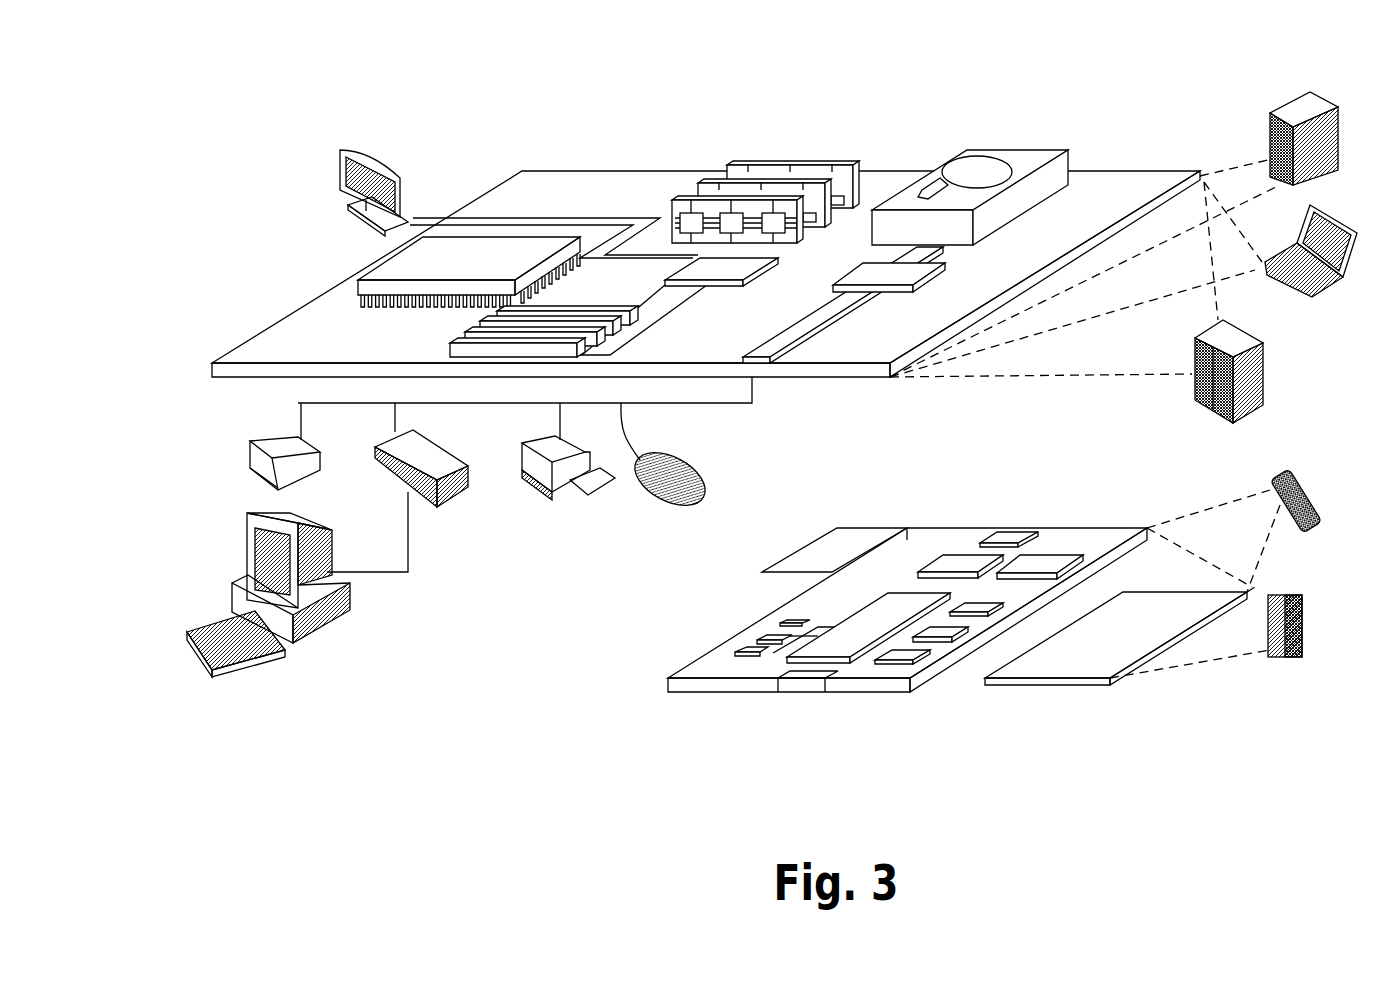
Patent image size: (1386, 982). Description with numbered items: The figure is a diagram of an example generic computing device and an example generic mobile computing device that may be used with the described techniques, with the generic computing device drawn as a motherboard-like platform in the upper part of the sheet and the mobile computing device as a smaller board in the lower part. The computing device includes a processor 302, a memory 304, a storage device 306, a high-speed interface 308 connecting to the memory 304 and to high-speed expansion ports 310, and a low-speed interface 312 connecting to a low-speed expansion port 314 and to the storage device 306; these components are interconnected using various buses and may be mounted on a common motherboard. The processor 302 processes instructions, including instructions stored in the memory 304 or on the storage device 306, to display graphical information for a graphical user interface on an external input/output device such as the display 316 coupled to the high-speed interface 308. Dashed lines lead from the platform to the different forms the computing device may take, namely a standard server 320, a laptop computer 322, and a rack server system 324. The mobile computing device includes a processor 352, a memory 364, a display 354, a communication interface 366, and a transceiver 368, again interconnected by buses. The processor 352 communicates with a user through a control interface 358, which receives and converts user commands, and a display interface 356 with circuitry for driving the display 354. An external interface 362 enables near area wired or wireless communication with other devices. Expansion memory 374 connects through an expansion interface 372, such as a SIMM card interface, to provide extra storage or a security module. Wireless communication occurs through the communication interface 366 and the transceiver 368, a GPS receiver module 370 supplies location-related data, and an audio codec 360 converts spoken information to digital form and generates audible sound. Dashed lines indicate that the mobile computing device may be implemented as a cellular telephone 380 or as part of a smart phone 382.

The processor 302 is at (372, 262).
The memory 304 is at (776, 165).
The storage device 306 is at (970, 152).
The high-speed interface 308 is at (721, 287).
The high-speed expansion ports 310 is at (455, 343).
The low-speed interface 312 is at (868, 263).
The low-speed expansion port 314 is at (752, 355).
The display 316 is at (346, 140).
The standard server 320 is at (1277, 110).
The laptop computer 322 is at (1340, 292).
The rack server system 324 is at (1265, 370).
The processor 352 is at (856, 624).
The display 354 is at (1174, 593).
The display interface 356 is at (920, 664).
The control interface 358 is at (952, 642).
The audio codec 360 is at (1003, 607).
The external interface 362 is at (803, 693).
The memory 364 is at (757, 640).
The communication interface 366 is at (955, 550).
The transceiver 368 is at (1048, 550).
The GPS receiver module 370 is at (1008, 532).
The expansion interface 372 is at (907, 540).
The expansion memory 374 is at (813, 540).
The cellular telephone 380 is at (1283, 472).
The smart phone 382 is at (1300, 595).